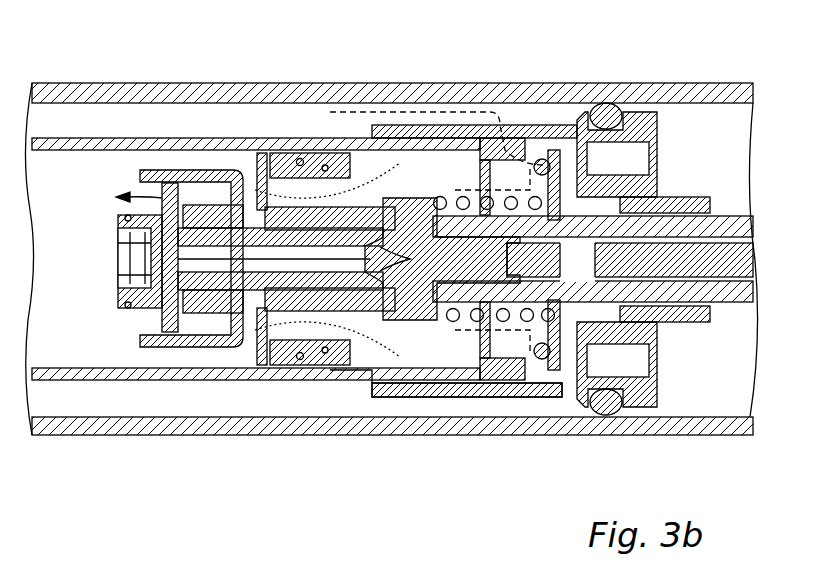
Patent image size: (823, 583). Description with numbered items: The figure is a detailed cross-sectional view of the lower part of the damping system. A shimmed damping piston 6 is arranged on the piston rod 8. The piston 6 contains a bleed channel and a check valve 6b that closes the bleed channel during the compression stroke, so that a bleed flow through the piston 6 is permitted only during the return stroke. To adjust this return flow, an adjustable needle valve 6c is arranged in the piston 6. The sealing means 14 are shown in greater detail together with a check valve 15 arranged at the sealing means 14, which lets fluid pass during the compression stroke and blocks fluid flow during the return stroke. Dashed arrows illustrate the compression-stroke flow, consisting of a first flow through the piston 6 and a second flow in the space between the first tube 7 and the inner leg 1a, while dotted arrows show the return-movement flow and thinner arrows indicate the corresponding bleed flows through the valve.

The inner leg 1a is at (150, 435).
The first tube 7 is at (68, 380).
The shimmed piston 6 is at (355, 138).
The check valve 6b is at (143, 313).
The adjustable needle valve 6c is at (477, 277).
The piston rod 8 is at (737, 227).
The sealing means 14 is at (608, 110).
The check valve 15 is at (540, 160).